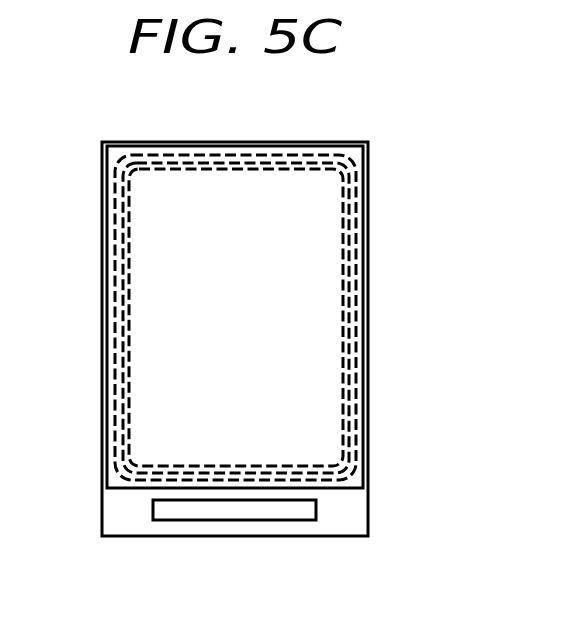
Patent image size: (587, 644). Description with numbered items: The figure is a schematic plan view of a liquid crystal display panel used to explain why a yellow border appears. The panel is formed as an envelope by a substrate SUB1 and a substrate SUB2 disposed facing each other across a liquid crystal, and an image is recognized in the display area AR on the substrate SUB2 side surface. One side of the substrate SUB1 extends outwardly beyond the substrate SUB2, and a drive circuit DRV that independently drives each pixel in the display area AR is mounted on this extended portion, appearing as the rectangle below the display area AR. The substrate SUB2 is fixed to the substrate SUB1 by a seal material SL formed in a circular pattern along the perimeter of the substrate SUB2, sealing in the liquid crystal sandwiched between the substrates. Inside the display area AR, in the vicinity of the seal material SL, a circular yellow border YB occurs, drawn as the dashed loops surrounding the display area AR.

The substrate SUB1 is at (368, 405).
The substrate SUB2 is at (363, 271).
The seal material SL is at (115, 270).
The yellow border YB is at (283, 166).
The display area AR is at (236, 317).
The drive circuit DRV is at (237, 520).